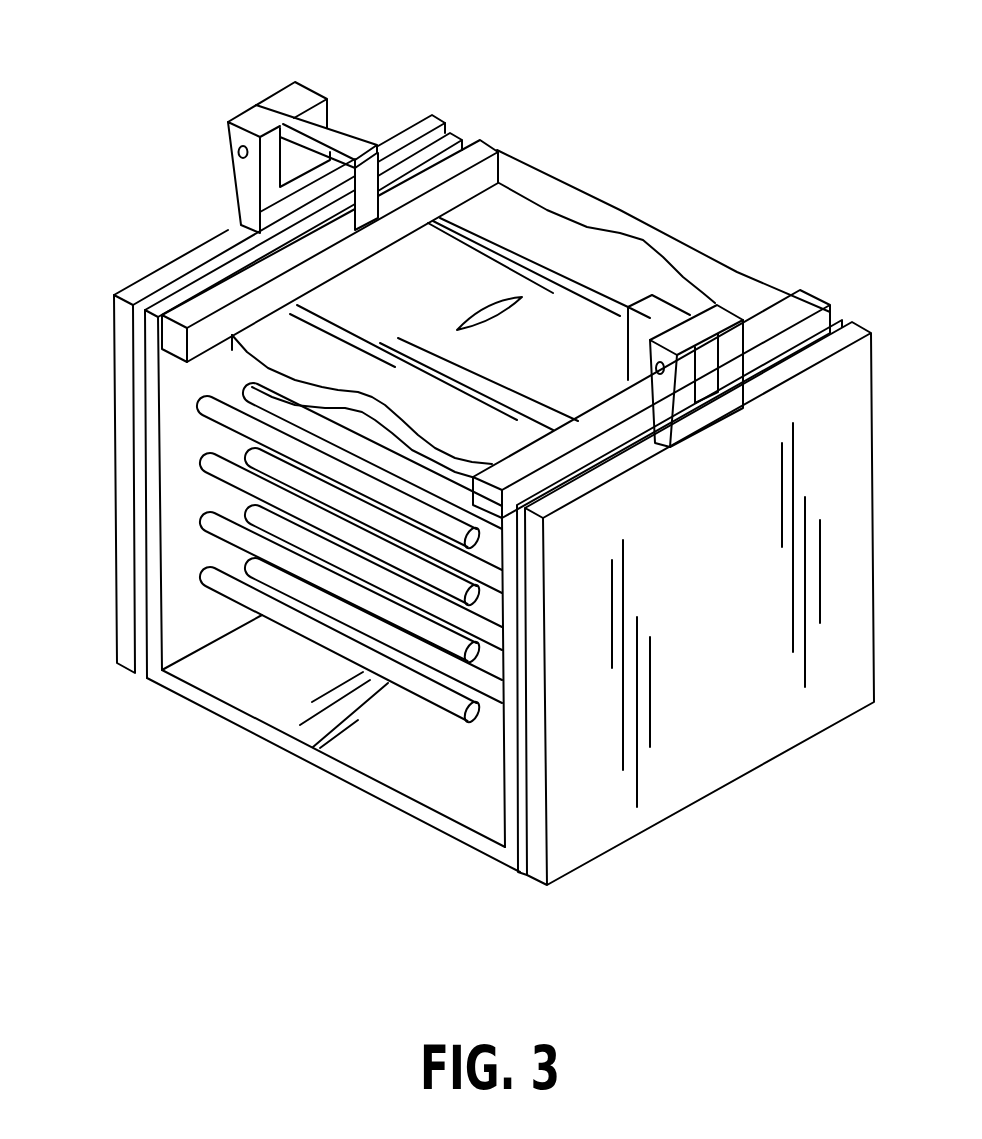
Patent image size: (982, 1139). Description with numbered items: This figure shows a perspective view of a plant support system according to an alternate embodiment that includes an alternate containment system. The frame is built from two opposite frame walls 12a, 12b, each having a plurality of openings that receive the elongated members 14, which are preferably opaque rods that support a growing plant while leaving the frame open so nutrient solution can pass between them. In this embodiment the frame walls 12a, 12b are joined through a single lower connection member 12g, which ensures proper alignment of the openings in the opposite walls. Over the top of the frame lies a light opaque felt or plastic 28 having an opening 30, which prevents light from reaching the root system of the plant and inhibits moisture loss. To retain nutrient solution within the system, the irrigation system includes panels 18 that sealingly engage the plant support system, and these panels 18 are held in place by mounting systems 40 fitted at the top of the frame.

The frame wall 12a is at (150, 565).
The frame wall 12b is at (500, 773).
The lower connection member 12g is at (330, 770).
The elongated members 14 is at (270, 627).
The panels 18 is at (188, 252).
The light opaque felt or plastic 28 is at (497, 227).
The opening 30 is at (488, 312).
The mounting systems 40 is at (343, 133).